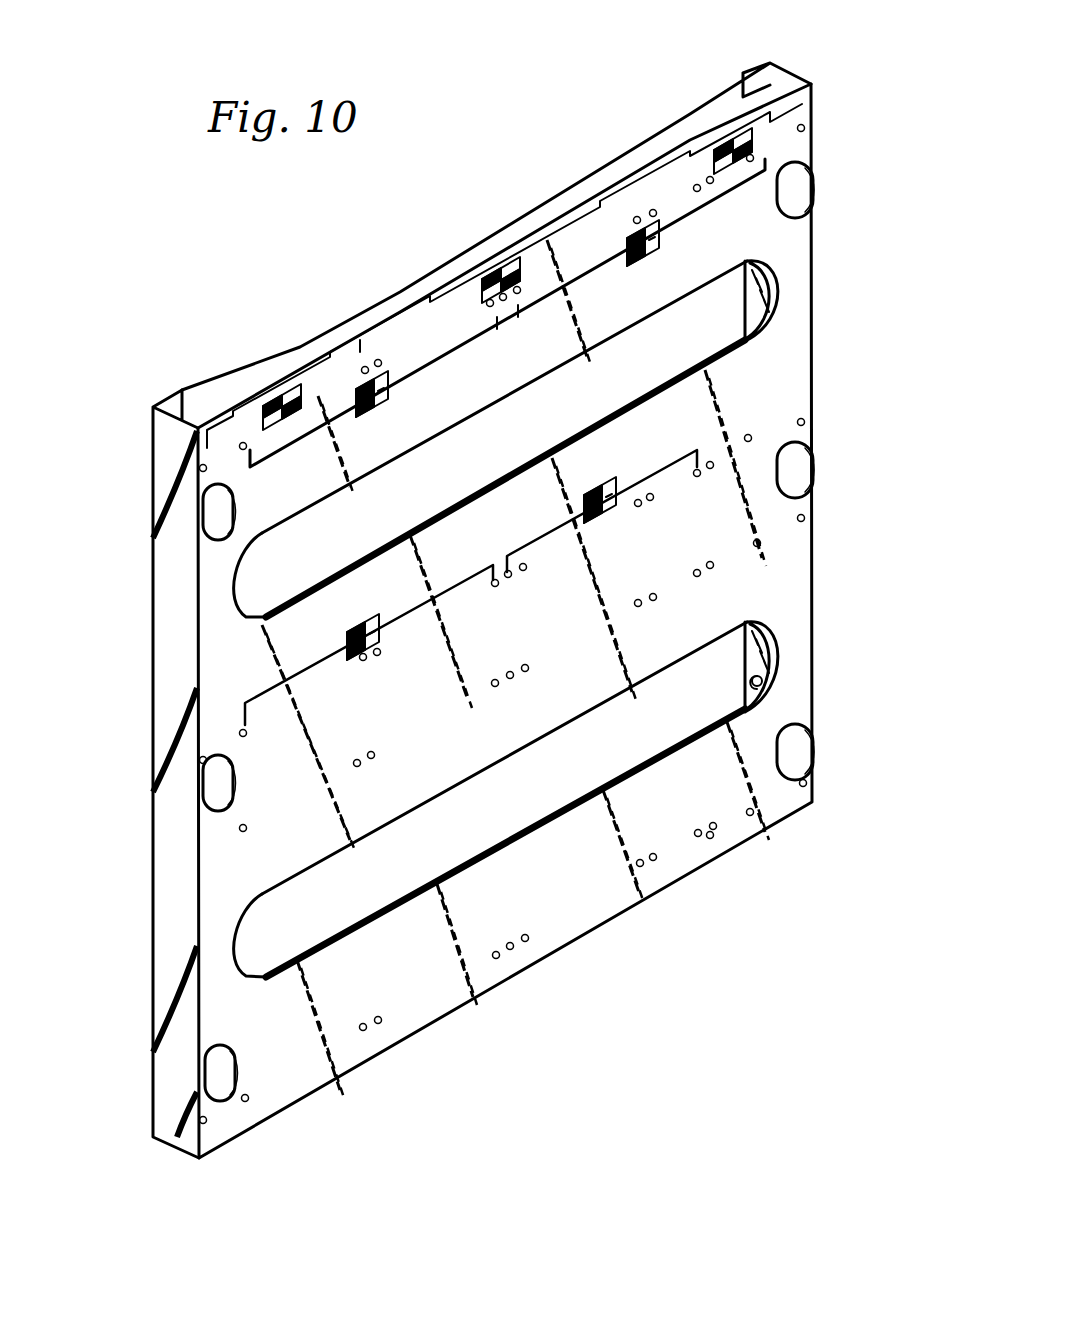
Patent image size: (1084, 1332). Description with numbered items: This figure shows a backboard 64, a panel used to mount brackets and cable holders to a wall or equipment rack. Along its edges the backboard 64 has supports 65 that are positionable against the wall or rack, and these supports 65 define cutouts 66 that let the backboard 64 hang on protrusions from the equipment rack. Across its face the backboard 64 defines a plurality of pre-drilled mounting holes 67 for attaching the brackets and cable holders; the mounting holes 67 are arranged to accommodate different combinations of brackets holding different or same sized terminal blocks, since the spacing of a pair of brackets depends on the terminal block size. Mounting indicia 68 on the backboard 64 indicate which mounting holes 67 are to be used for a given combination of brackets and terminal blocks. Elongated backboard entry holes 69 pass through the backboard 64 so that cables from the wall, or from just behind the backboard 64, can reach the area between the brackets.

The backboard 64 is at (592, 944).
The supports 65 is at (750, 88).
The cutouts 66 is at (762, 672).
The mounting holes 67 is at (527, 944).
The mounting indicia 68 is at (638, 243).
The backboard entry holes 69 is at (732, 308).